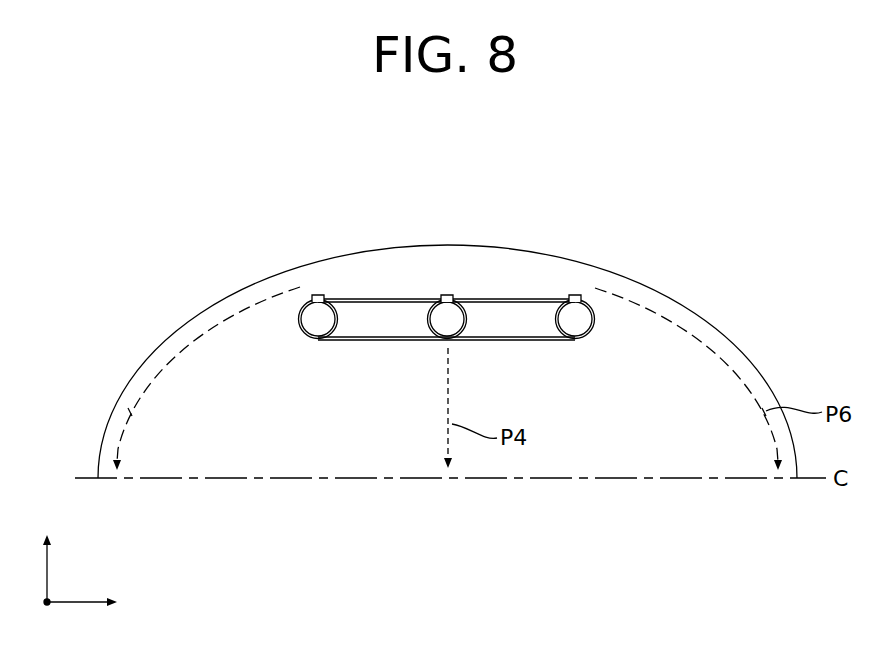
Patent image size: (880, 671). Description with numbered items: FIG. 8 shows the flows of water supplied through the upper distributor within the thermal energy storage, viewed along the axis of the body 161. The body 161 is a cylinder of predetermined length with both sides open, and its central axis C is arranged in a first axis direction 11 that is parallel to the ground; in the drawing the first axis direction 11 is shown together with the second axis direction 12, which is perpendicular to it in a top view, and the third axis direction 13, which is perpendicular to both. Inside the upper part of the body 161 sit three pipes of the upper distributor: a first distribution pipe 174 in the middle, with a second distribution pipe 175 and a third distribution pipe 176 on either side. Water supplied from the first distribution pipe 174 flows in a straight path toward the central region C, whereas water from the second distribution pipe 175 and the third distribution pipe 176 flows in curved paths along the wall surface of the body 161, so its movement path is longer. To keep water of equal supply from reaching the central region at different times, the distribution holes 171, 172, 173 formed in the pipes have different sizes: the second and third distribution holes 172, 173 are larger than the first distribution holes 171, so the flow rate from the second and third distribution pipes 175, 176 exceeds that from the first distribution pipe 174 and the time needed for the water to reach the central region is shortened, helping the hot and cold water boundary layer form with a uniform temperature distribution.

The body 161 is at (513, 250).
The first distribution holes 171 is at (447, 295).
The second distribution holes 172 is at (318, 295).
The third distribution holes 173 is at (575, 295).
The first distribution pipe 174 is at (430, 340).
The second distribution pipe 175 is at (130, 411).
The third distribution pipe 176 is at (556, 340).
The first axis direction 11 is at (49, 619).
The second axis direction 12 is at (98, 602).
The third axis direction 13 is at (49, 552).